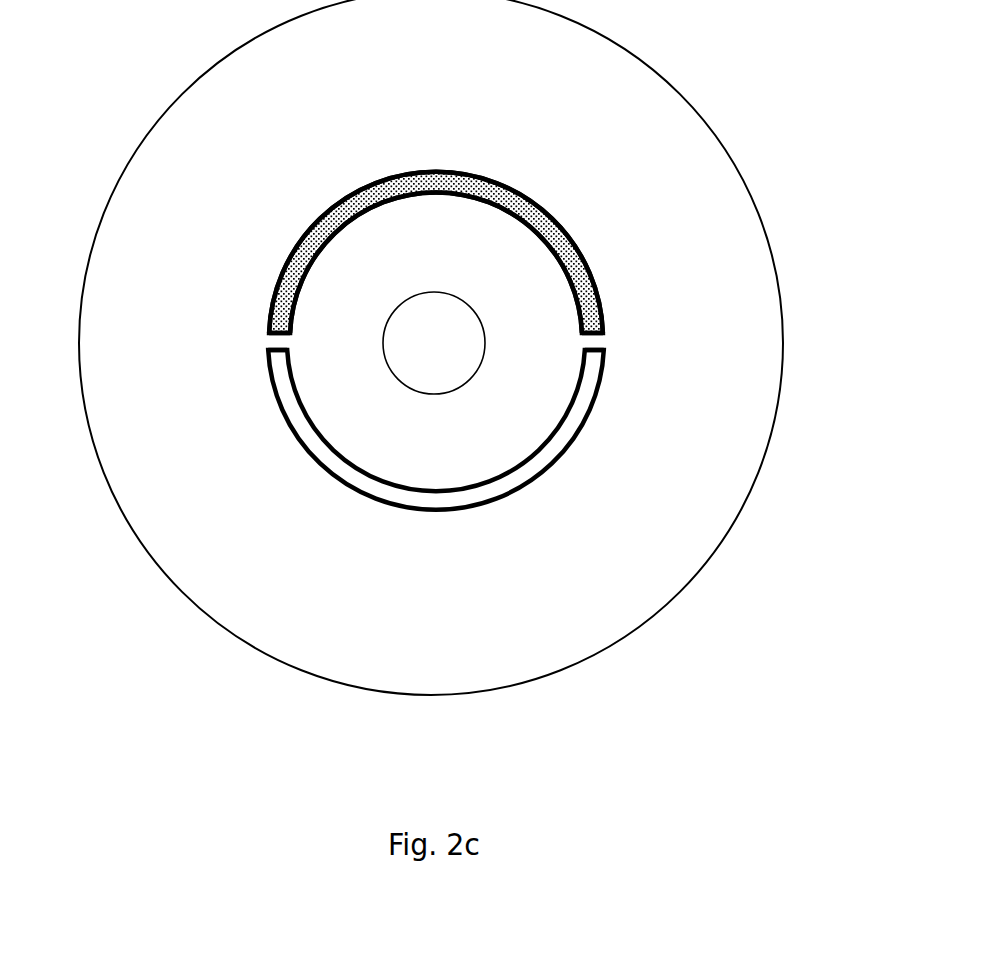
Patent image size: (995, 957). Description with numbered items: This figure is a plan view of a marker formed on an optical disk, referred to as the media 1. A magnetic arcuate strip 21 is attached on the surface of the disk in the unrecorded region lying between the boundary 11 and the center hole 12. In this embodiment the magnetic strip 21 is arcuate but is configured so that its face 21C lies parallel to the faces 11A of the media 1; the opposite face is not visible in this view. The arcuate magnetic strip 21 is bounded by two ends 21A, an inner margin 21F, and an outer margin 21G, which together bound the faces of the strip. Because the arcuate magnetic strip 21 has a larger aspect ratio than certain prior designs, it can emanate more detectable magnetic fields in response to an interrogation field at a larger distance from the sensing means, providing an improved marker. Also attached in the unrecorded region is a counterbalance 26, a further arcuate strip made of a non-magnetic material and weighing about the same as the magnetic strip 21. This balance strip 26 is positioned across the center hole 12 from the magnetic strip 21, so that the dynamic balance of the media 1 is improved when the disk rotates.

The media 1 is at (456, 378).
The unrecorded region boundary 11 is at (472, 347).
The faces of the media 11A is at (697, 462).
The center hole 12 is at (488, 347).
The magnetic arcuate strip 21 is at (561, 224).
The ends 21A is at (277, 336).
The face 21C is at (553, 217).
The inner margin 21F is at (498, 205).
The outer margin 21G is at (484, 175).
The counterbalance 26 is at (605, 375).